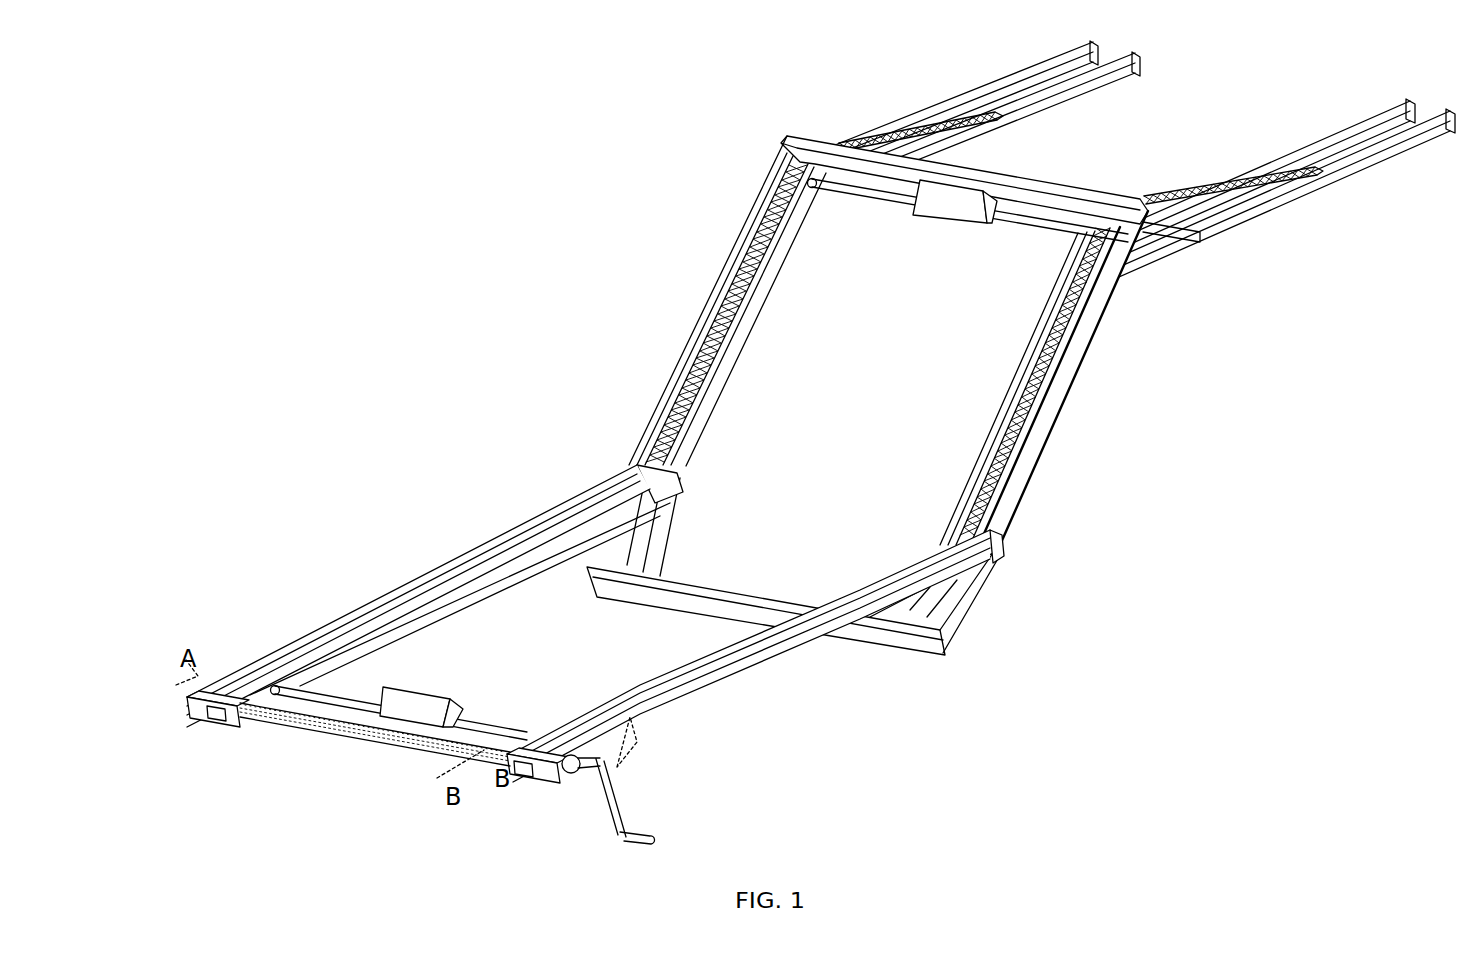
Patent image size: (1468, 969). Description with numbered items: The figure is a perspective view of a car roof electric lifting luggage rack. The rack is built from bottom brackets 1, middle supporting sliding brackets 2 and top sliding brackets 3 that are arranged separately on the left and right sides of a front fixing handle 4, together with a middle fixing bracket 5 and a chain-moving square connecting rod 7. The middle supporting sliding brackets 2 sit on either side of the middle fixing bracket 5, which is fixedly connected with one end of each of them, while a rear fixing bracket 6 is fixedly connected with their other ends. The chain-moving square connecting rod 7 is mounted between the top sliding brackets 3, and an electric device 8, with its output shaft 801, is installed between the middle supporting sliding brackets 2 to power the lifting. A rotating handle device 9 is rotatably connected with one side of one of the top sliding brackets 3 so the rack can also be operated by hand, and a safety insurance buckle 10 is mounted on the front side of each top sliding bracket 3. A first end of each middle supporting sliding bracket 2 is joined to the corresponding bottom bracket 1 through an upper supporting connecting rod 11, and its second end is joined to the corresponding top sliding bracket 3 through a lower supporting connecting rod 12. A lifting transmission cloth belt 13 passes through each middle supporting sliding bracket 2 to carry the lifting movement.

The bottom bracket 1 is at (1142, 172).
The middle supporting sliding bracket 2 is at (888, 394).
The top sliding bracket 3 is at (595, 623).
The front fixing handle 4 is at (375, 772).
The middle fixing bracket 5 is at (766, 595).
The rear fixing bracket 6 is at (964, 177).
The chain-moving square connecting rod 7 is at (375, 750).
The electric device 8 is at (688, 453).
The rotating handle device 9 is at (610, 796).
The safety insurance buckle 10 is at (164, 736).
The upper supporting connecting rod 11 is at (1228, 262).
The lower supporting connecting rod 12 is at (508, 580).
The lifting transmission cloth belt 13 is at (1081, 237).
The output shaft 801 is at (700, 460).